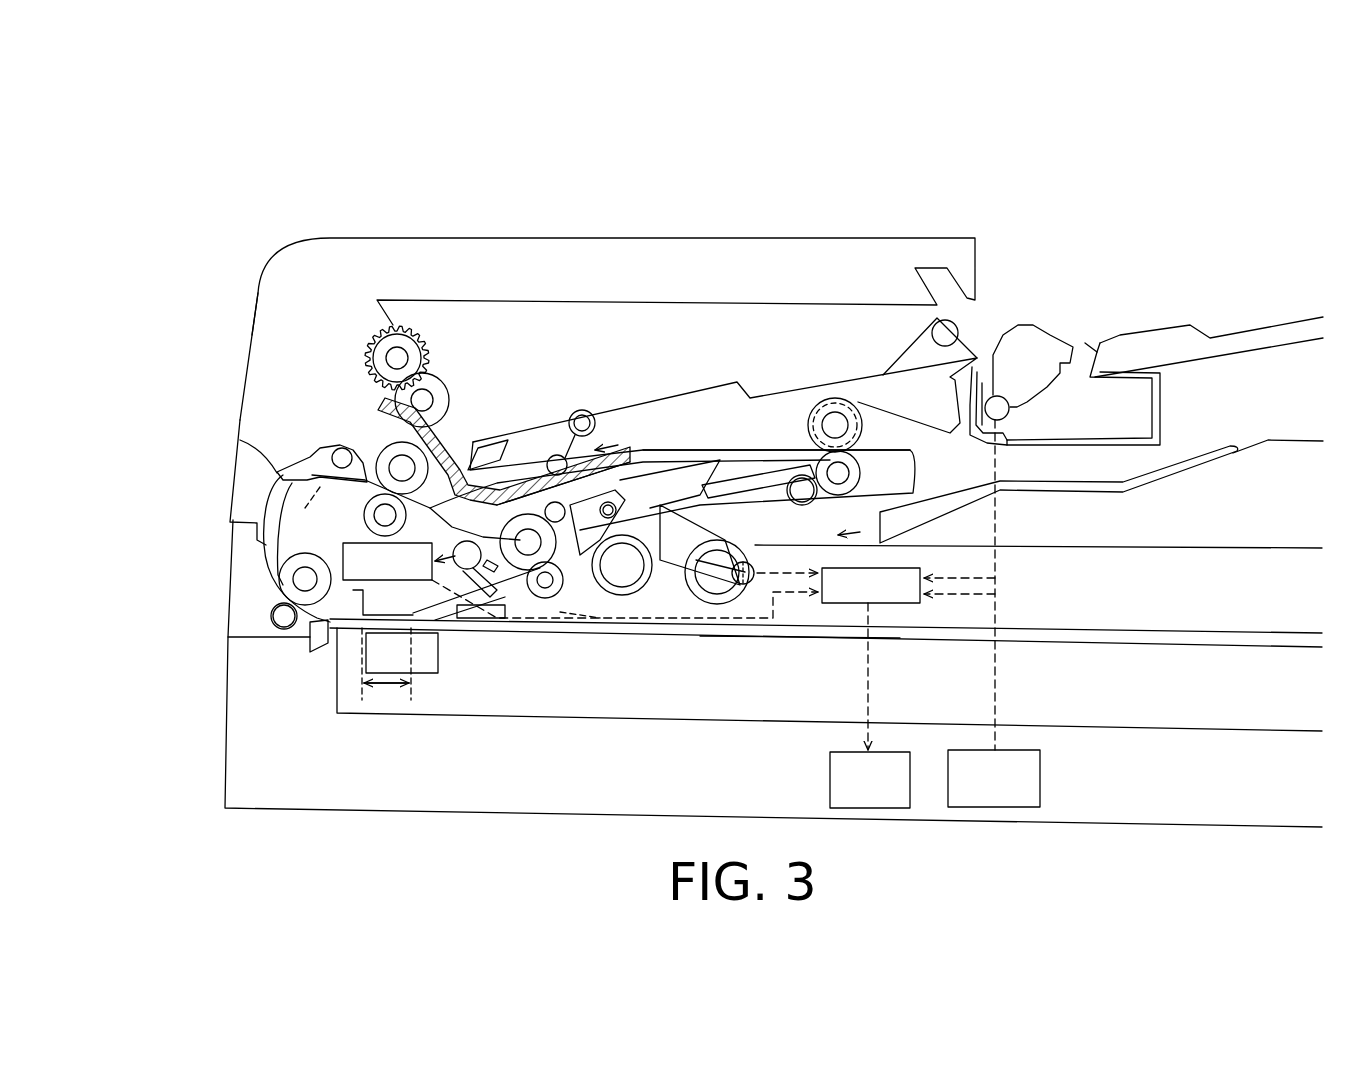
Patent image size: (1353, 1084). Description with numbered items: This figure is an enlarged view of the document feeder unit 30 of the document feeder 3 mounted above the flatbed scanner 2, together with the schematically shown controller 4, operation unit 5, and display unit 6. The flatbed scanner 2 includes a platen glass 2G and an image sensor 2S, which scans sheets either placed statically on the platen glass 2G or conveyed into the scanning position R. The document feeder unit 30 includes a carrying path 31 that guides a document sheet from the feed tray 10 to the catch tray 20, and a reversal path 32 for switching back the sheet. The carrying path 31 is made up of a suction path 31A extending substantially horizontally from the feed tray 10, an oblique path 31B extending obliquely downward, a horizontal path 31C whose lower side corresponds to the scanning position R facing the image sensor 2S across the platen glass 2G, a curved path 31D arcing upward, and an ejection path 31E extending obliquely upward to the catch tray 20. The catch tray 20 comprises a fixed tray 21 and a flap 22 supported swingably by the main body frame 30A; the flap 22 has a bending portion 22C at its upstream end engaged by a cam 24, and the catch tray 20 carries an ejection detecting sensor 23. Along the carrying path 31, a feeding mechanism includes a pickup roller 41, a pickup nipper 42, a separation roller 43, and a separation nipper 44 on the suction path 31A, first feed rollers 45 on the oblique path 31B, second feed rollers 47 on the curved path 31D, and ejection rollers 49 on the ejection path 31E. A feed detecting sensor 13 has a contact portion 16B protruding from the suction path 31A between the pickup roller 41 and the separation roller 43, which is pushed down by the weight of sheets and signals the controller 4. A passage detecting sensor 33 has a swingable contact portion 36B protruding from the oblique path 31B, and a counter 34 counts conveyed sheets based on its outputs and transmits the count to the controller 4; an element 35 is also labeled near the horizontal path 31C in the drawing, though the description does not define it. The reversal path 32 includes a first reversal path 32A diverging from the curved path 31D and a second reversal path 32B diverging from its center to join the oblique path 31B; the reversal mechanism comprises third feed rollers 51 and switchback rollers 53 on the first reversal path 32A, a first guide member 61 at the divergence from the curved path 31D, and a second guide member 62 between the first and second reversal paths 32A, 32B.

The flatbed scanner 2 is at (226, 690).
The image sensor 2S is at (397, 628).
The platen glass 2G is at (800, 632).
The document feeder 3 is at (315, 188).
The controller 4 is at (900, 605).
The operation unit 5 is at (1042, 770).
The display unit 6 is at (828, 770).
The feed tray 10 is at (1288, 433).
The feed detecting sensor 13 is at (755, 568).
The contact portion 16B is at (678, 555).
The catch tray 20 is at (1226, 295).
The fixed tray 21 is at (1138, 313).
The flap 22 is at (782, 393).
The bending portion 22C is at (500, 440).
The ejection detecting sensor 23 is at (1035, 318).
The cam 24 is at (600, 440).
The document feeder unit 30 is at (518, 232).
The main body frame 30A is at (252, 335).
The carrying path 31 is at (340, 400).
The suction path 31A is at (880, 522).
The oblique path 31B is at (540, 618).
The horizontal path 31C is at (423, 677).
The curved path 31D is at (268, 515).
The ejection path 31E is at (345, 435).
The reversal path 32 is at (677, 452).
The first reversal path 32A is at (457, 430).
The second reversal path 32B is at (577, 513).
The passage detecting sensor 33 is at (478, 535).
The counter 34 is at (345, 556).
The reading position 35 is at (447, 620).
The swingable contact portion 36B is at (510, 582).
The pickup roller 41 is at (727, 593).
The pickup nipper 42 is at (770, 503).
The separation roller 43 is at (642, 588).
The separation nipper 44 is at (705, 487).
The first feed rollers 45 is at (560, 588).
The second feed rollers 47 is at (283, 580).
The ejection rollers 49 is at (437, 395).
The third feed rollers 51 is at (375, 514).
The switchback rollers 53 is at (862, 468).
The first guide member 61 is at (280, 462).
The second guide member 62 is at (610, 473).
The scanning position R is at (386, 670).